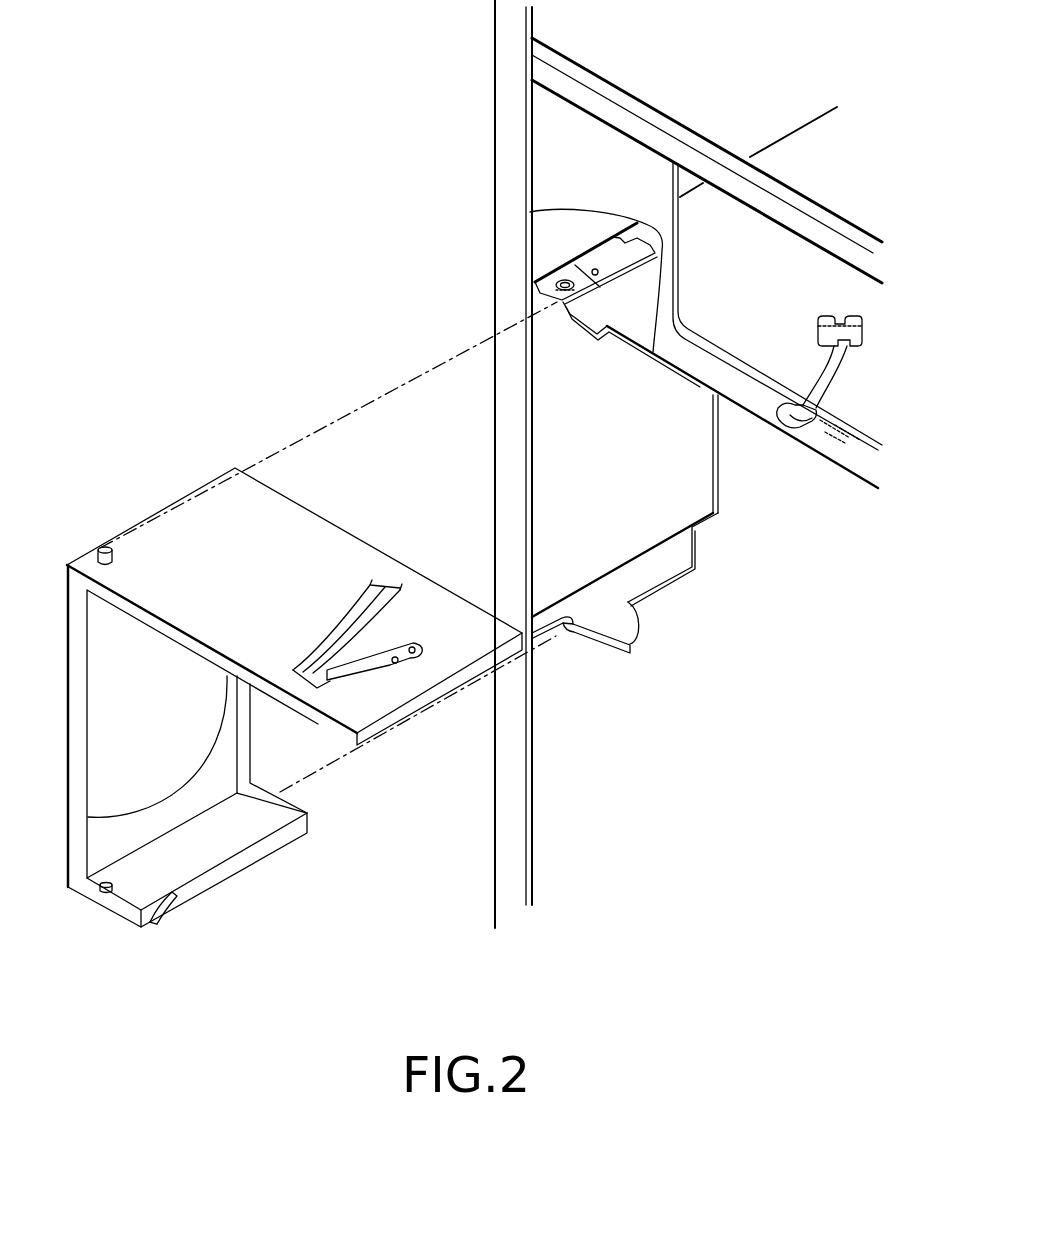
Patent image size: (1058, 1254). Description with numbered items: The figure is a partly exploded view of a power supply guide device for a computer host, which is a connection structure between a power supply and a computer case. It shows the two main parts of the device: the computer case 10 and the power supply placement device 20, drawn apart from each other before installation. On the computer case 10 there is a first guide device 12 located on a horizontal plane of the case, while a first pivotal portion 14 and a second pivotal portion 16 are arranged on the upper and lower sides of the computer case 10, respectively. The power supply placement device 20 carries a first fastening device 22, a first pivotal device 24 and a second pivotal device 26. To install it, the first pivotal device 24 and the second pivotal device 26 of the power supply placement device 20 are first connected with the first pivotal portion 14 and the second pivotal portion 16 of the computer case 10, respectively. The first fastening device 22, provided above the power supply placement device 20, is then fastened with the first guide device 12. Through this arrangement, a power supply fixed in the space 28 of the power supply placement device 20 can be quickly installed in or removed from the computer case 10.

The computer case 10 is at (494, 98).
The first guide device 12 is at (850, 335).
The first pivotal portion 14 is at (535, 282).
The second pivotal portion 16 is at (571, 635).
The power supply placement device 20 is at (195, 487).
The first fastening device 22 is at (360, 593).
The first pivotal device 24 is at (99, 548).
The second pivotal device 26 is at (106, 892).
The space 28 is at (362, 806).